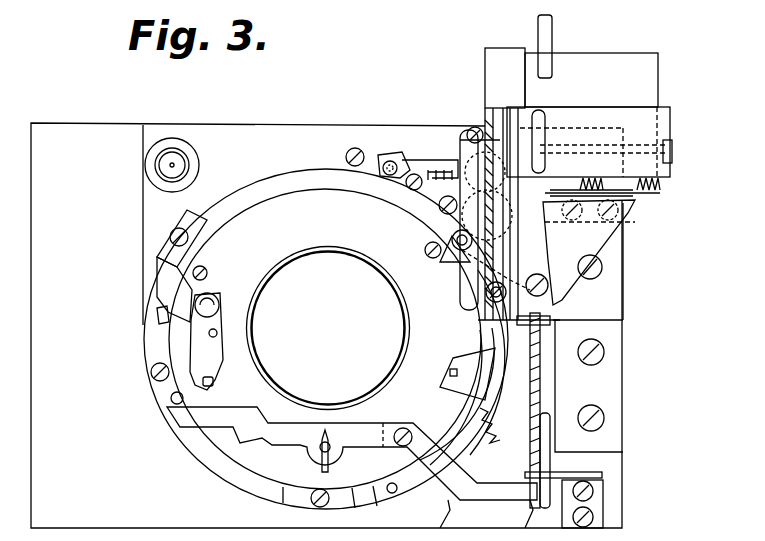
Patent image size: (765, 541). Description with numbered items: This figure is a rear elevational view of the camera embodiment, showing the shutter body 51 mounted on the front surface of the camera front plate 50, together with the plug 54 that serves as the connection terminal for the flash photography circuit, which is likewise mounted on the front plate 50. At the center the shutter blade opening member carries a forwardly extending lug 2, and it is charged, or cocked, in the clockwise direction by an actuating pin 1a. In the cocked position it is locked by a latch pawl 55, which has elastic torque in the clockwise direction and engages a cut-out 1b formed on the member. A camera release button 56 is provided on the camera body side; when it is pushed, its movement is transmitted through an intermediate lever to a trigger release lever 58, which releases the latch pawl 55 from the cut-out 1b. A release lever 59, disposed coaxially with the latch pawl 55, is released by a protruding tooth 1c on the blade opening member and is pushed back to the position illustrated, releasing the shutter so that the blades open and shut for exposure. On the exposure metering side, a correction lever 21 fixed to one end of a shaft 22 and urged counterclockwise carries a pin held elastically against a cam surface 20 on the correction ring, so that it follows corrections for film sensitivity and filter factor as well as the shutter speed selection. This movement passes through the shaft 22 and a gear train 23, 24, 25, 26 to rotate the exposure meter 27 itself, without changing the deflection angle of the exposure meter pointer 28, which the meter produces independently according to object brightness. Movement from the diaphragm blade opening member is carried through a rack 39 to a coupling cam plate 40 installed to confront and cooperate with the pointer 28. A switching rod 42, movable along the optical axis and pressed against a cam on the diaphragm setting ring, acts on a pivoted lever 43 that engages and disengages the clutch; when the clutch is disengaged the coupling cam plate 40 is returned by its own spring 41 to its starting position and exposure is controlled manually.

The actuating pin 1a is at (388, 497).
The cut-out 1b is at (240, 447).
The protruding tooth 1c is at (158, 297).
The forwardly extending lug 2 is at (497, 352).
The cam surface 20 is at (440, 227).
The correction lever 21 is at (480, 265).
The shaft 22 is at (490, 270).
The gear train gear 23 is at (553, 300).
The gear train gear 24 is at (576, 290).
The gear train gear 25 is at (632, 215).
The gear train gear 26 is at (630, 205).
The exposure meter 27 is at (622, 53).
The exposure meter pointer 28 is at (470, 130).
The rack 39 is at (487, 100).
The coupling cam plate 40 is at (487, 75).
The spring 41 is at (545, 350).
The switching rod 42 is at (392, 163).
The lever 43 is at (426, 162).
The front plate 50 is at (532, 505).
The shutter body 51 is at (465, 500).
The plug 54 is at (176, 150).
The latch pawl 55 is at (232, 317).
The camera release button 56 is at (553, 38).
The trigger release lever 58 is at (170, 398).
The release lever 59 is at (155, 315).